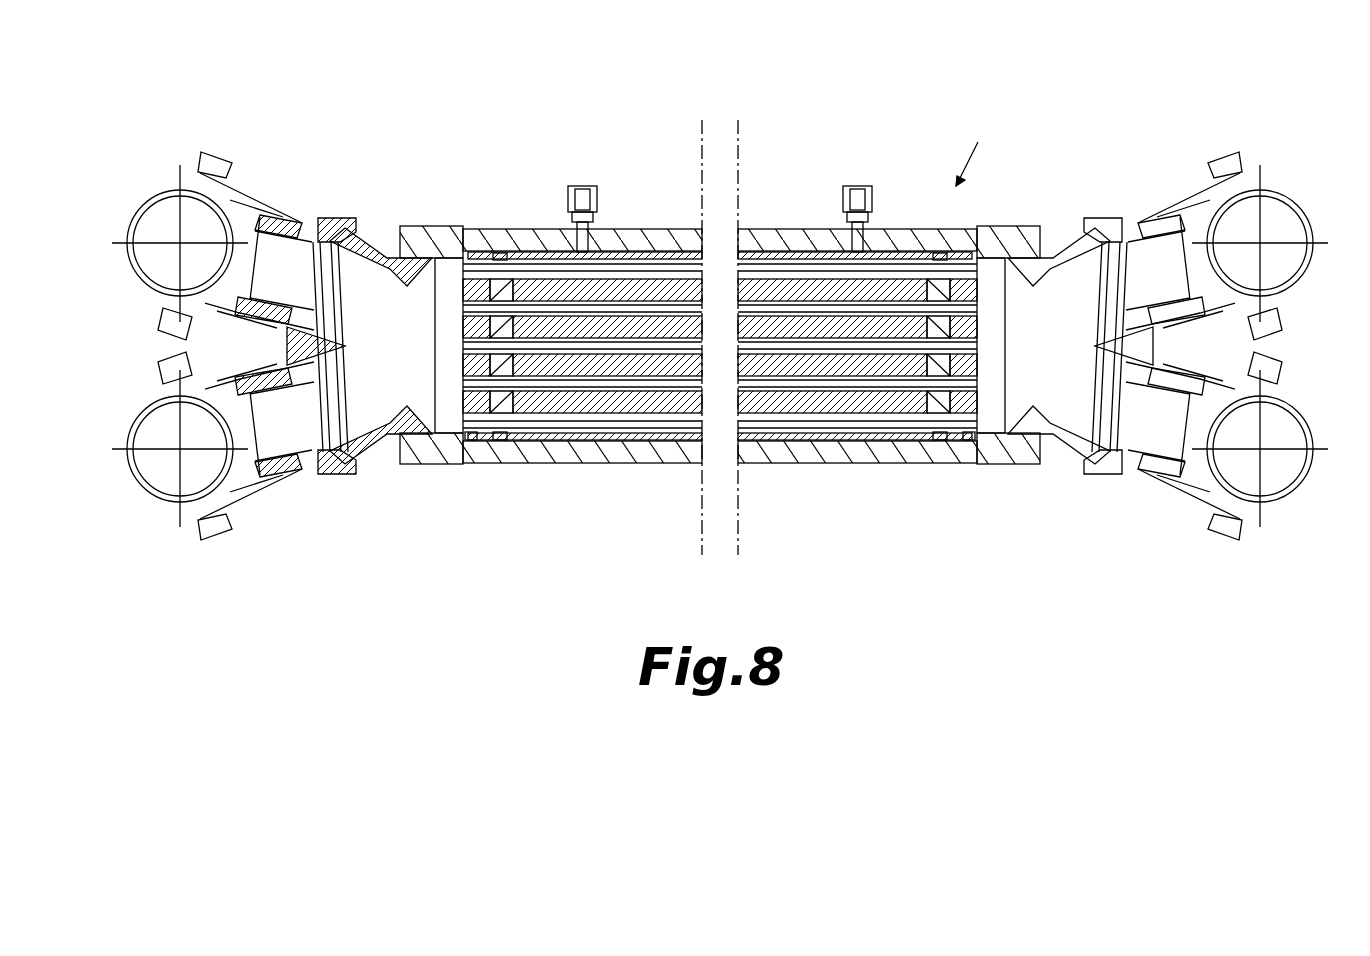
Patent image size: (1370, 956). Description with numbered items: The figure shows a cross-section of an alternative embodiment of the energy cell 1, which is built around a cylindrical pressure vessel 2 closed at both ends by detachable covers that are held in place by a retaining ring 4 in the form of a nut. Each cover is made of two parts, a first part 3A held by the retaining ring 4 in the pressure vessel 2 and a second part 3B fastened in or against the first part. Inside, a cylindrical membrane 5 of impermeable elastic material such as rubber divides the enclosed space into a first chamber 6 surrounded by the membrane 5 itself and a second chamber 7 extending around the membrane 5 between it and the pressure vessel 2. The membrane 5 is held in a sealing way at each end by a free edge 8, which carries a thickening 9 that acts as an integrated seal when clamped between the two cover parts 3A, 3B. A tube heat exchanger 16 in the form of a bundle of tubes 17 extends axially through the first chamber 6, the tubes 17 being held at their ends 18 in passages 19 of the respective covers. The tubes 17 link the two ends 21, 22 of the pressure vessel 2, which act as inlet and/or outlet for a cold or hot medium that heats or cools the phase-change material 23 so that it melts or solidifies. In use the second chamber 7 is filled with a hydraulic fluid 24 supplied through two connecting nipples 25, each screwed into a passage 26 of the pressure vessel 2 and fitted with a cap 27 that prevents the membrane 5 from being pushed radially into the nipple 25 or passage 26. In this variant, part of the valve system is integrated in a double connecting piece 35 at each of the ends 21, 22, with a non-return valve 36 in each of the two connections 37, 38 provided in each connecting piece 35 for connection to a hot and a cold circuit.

The energy cell 1 is at (420, 106).
The pressure vessel 2 is at (676, 240).
The first part 3A is at (472, 441).
The second part 3B is at (505, 441).
The retaining ring 4 is at (440, 458).
The membrane 5 is at (750, 248).
The first chamber 6 is at (800, 290).
The second chamber 7 is at (776, 264).
The free edge 8 is at (527, 256).
The thickening 9 is at (500, 256).
The tube heat exchanger 16 is at (976, 151).
The tubes 17 is at (838, 422).
The ends 18 is at (480, 343).
The passages 19 is at (467, 270).
The end 21 is at (405, 340).
The end 22 is at (1038, 345).
The phase-change material 23 is at (660, 400).
The hydraulic fluid 24 is at (593, 441).
The connecting nipples 25 is at (594, 186).
The passage 26 is at (603, 244).
The cap 27 is at (573, 245).
The double connecting piece 35 is at (382, 307).
The non-return valve 36 is at (318, 240).
The connection 37 is at (300, 222).
The connection 38 is at (300, 468).